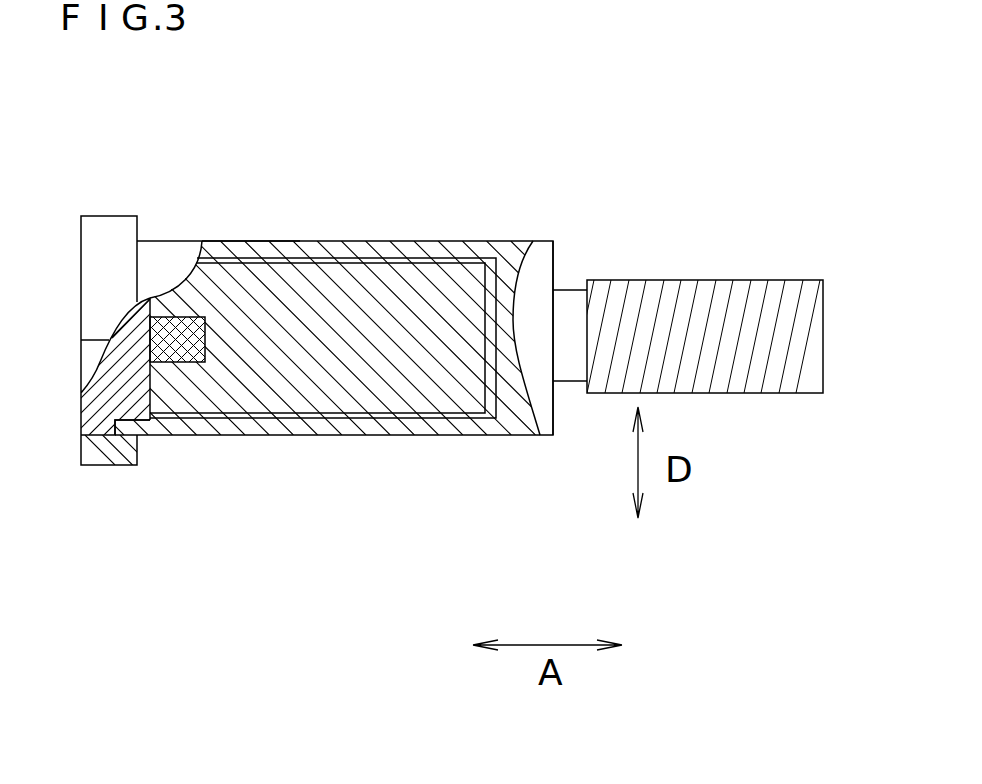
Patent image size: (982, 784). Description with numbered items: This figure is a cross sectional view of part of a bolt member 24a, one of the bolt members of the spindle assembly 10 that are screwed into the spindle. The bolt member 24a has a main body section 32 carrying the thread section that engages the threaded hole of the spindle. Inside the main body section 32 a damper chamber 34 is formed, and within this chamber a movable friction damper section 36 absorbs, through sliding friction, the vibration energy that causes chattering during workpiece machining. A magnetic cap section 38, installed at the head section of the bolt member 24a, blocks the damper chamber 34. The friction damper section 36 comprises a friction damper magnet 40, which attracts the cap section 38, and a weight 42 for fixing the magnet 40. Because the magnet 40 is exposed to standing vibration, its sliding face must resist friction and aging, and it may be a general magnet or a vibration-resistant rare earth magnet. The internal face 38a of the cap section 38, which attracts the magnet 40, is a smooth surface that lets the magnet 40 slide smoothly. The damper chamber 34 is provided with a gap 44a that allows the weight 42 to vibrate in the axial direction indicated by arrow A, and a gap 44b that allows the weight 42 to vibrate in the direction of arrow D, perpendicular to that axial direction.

The roller unit 10 is at (470, 108).
The bolt member 24a is at (427, 223).
The main body section 32 is at (568, 228).
The damper chamber 34 is at (400, 378).
The friction damper section 36 is at (240, 278).
The magnetic cap section 38 is at (95, 415).
The internal face of the cap 38a is at (152, 385).
The friction damper magnet 40 is at (178, 362).
The weight 42 is at (293, 363).
The gap 44a is at (520, 367).
The gap 44b is at (493, 370).